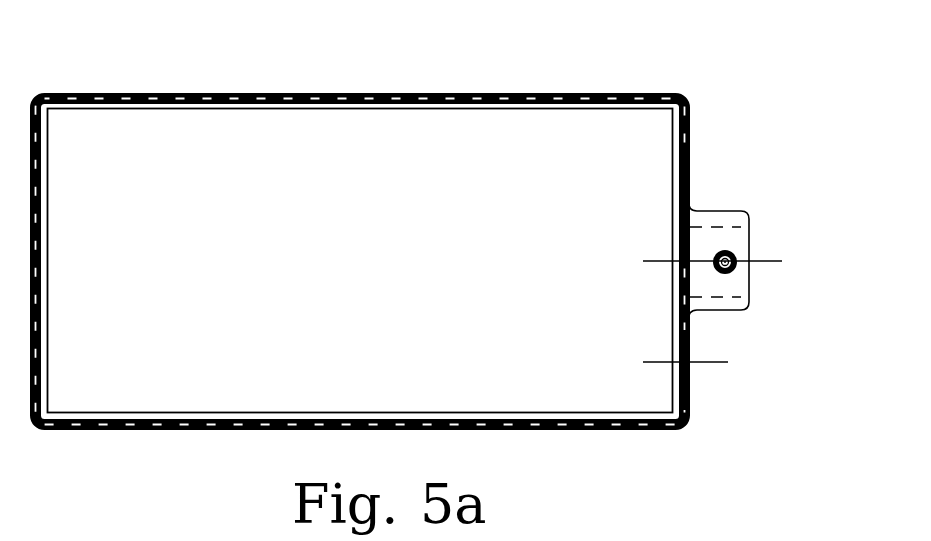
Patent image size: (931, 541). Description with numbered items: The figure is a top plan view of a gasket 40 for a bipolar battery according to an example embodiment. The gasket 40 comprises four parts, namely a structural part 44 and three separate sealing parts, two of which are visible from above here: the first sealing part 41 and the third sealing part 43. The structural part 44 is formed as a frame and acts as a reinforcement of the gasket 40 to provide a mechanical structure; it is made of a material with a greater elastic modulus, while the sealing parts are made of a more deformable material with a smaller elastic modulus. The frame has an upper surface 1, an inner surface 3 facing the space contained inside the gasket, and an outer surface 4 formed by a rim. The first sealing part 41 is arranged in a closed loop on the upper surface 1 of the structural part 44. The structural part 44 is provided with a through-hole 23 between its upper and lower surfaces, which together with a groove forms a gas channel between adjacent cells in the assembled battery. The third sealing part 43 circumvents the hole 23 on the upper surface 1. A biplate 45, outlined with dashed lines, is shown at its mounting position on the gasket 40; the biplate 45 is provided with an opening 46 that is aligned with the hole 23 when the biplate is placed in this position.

The gasket 40 is at (108, 40).
The upper surface 1 is at (680, 86).
The biplate 45 is at (447, 86).
The first sealing part 41 is at (680, 150).
The inner surface 3 is at (664, 205).
The outer surface 4 is at (700, 387).
The third sealing part 43 is at (722, 250).
The structural part 44 is at (749, 306).
The opening 46 is at (744, 244).
The through-hole 23 is at (749, 278).